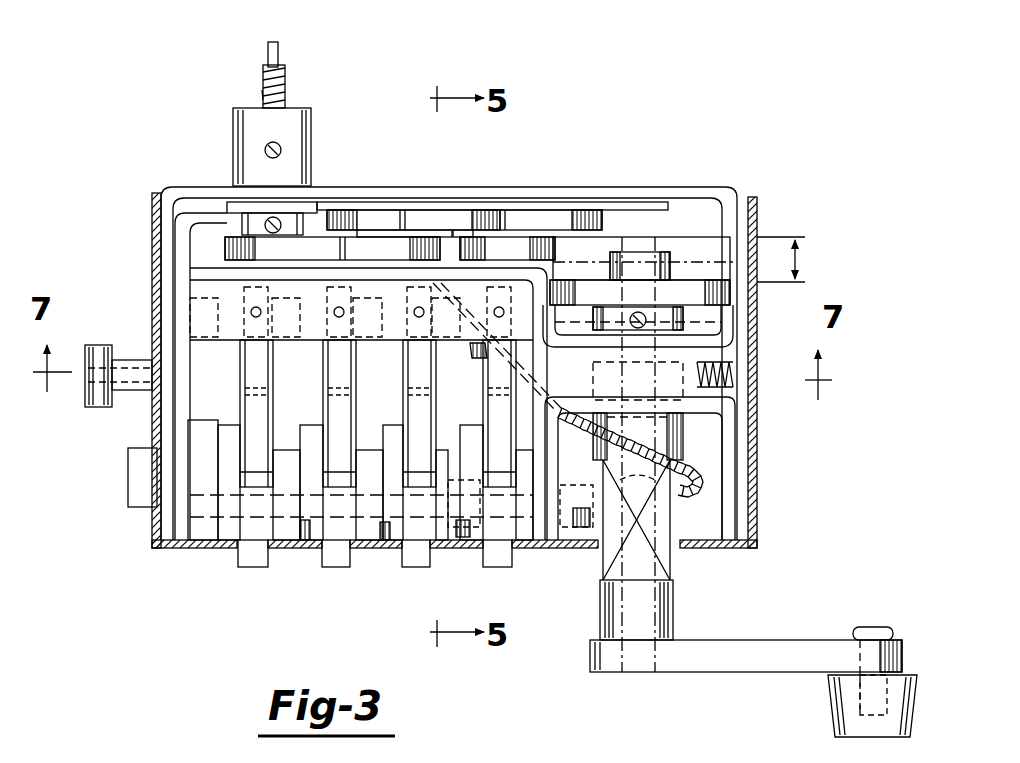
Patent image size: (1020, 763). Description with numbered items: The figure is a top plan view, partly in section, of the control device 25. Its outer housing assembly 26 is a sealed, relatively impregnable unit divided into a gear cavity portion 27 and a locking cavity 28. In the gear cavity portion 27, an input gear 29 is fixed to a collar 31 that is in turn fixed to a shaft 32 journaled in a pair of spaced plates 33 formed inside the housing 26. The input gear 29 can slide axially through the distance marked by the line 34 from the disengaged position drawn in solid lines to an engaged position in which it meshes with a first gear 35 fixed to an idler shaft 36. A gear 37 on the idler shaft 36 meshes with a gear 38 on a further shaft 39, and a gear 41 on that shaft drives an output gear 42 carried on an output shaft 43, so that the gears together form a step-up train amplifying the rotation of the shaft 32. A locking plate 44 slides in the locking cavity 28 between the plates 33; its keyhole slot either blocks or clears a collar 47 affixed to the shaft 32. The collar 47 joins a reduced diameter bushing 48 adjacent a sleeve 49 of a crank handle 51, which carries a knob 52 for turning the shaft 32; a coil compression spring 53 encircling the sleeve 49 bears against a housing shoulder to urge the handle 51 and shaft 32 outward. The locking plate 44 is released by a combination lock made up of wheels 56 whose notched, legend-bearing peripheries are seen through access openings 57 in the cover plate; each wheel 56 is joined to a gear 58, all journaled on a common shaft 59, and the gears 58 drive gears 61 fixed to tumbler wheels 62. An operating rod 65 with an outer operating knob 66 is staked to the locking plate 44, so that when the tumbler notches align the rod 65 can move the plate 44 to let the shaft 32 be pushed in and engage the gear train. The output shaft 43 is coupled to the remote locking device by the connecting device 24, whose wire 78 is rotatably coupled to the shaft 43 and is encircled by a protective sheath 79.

The connecting device 24 is at (290, 80).
The control device 25 is at (690, 160).
The outer housing assembly 26 is at (760, 203).
The gear cavity portion 27 is at (608, 217).
The locking cavity 28 is at (212, 522).
The input gear 29 is at (733, 298).
The collar 31 is at (687, 258).
The shaft 32 is at (745, 314).
The spaced plates 33 is at (735, 345).
The dimension line 34 is at (800, 258).
The first gear 35 is at (528, 212).
The idler shaft 36 is at (473, 208).
The gear 37 is at (440, 208).
The gear 38 is at (330, 212).
The further shaft 39 is at (410, 205).
The gear 41 is at (365, 238).
The output gear 42 is at (232, 262).
The output shaft 43 is at (252, 222).
The locking plate 44 is at (735, 388).
The collar 47 is at (684, 435).
The reduced diameter bushing 48 is at (675, 520).
The sleeve 49 is at (673, 612).
The crank handle 51 is at (697, 672).
The knob 52 is at (828, 712).
The coil compression spring 53 is at (674, 560).
The wheels 56 is at (250, 560).
The access openings 57 is at (240, 550).
The gears 58 is at (217, 480).
The common shaft 59 is at (137, 487).
The gears 61 is at (222, 385).
The tumbler wheels 62 is at (250, 413).
The operating rod 65 is at (127, 365).
The operating knob 66 is at (92, 345).
The wire 78 is at (272, 66).
The protective sheath 79 is at (262, 95).